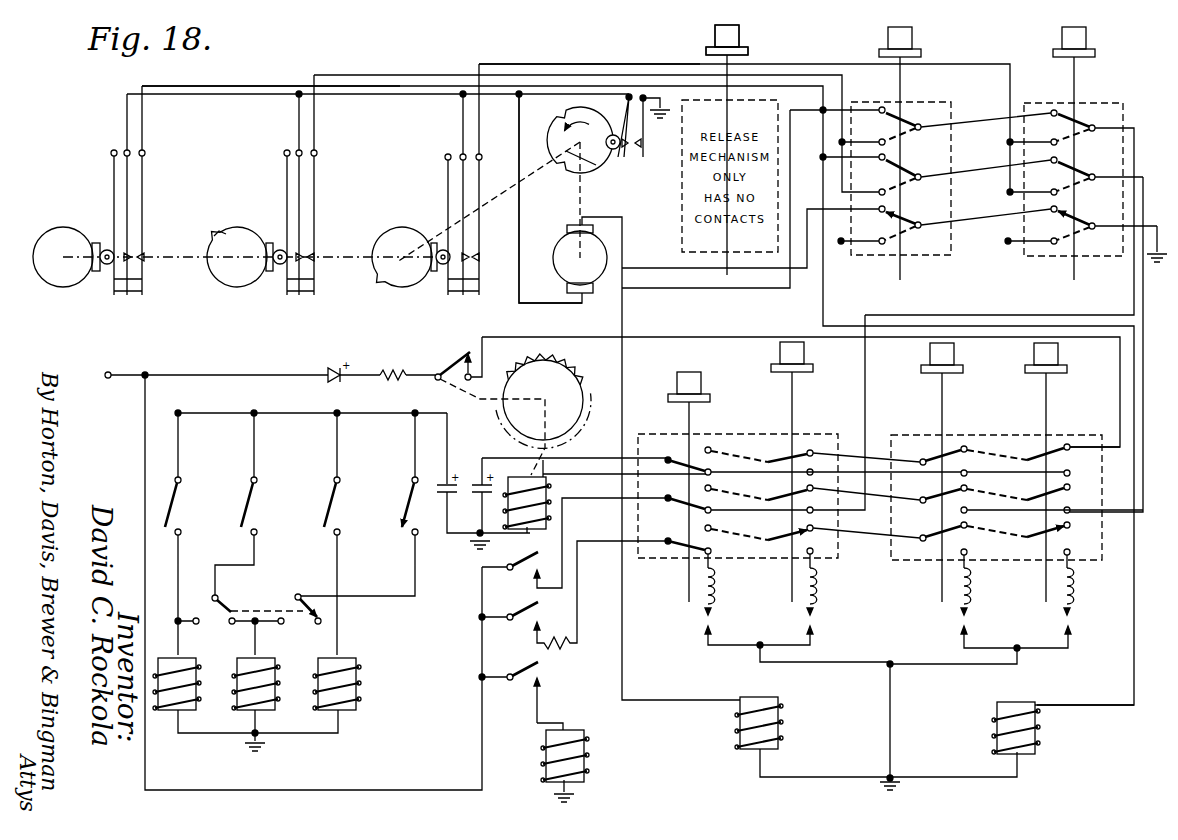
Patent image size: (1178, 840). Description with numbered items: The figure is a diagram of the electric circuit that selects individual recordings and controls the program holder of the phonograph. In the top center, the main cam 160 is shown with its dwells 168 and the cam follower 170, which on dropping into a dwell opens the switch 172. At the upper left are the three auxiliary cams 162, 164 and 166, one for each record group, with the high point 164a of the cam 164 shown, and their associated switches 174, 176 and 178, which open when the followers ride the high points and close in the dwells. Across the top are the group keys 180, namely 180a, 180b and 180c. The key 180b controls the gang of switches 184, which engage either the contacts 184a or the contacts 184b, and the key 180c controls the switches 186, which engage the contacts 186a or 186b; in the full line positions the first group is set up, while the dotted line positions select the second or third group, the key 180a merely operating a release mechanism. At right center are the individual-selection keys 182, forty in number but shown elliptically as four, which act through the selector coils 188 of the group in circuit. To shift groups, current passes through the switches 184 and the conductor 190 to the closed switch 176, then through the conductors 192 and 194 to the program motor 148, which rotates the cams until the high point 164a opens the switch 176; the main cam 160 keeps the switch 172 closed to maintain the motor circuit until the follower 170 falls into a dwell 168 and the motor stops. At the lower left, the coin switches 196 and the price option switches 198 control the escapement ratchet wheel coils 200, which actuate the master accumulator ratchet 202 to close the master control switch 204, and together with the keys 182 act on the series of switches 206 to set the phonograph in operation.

The program motor 148 is at (563, 250).
The main cam 160 is at (590, 158).
The auxiliary cam 162 is at (50, 238).
The auxiliary cam 164 is at (243, 240).
The high point 164a is at (222, 232).
The auxiliary cam 166 is at (397, 238).
The dwell 168 is at (563, 170).
The cam follower 170 is at (617, 125).
The switch 172 is at (635, 156).
The switch 174 is at (152, 242).
The switch 176 is at (322, 223).
The switch 178 is at (485, 256).
The group keys 180 is at (694, 43).
The group key 180a is at (740, 33).
The group key 180b is at (912, 34).
The group key 180c is at (1086, 34).
The individual-selection keys 182 is at (890, 501).
The switches 184 is at (926, 164).
The contacts 184a is at (884, 107).
The contacts 184b is at (886, 144).
The switches 186 is at (1054, 156).
The contacts 186a is at (1052, 140).
The contacts 186b is at (1058, 194).
The selector coils 188 is at (822, 606).
The conductor 190 is at (505, 63).
The conductor 192 is at (371, 96).
The conductor 194 is at (519, 292).
The switches 196 is at (247, 480).
The price option switches 198 is at (287, 598).
The escapement ratchet wheel coils 200 is at (325, 720).
The master accumulator ratchet 202 is at (596, 355).
The master control switch 204 is at (450, 359).
The switches 206 is at (497, 667).